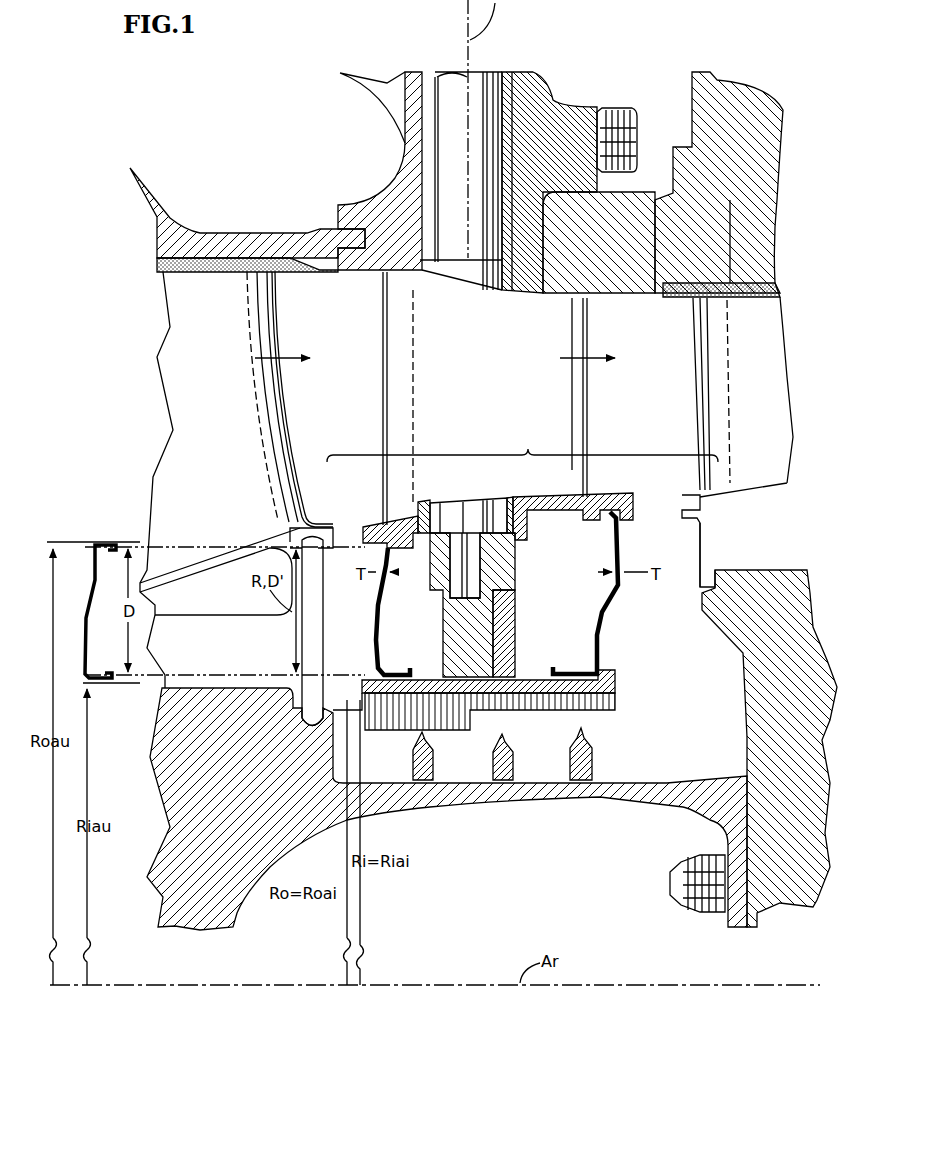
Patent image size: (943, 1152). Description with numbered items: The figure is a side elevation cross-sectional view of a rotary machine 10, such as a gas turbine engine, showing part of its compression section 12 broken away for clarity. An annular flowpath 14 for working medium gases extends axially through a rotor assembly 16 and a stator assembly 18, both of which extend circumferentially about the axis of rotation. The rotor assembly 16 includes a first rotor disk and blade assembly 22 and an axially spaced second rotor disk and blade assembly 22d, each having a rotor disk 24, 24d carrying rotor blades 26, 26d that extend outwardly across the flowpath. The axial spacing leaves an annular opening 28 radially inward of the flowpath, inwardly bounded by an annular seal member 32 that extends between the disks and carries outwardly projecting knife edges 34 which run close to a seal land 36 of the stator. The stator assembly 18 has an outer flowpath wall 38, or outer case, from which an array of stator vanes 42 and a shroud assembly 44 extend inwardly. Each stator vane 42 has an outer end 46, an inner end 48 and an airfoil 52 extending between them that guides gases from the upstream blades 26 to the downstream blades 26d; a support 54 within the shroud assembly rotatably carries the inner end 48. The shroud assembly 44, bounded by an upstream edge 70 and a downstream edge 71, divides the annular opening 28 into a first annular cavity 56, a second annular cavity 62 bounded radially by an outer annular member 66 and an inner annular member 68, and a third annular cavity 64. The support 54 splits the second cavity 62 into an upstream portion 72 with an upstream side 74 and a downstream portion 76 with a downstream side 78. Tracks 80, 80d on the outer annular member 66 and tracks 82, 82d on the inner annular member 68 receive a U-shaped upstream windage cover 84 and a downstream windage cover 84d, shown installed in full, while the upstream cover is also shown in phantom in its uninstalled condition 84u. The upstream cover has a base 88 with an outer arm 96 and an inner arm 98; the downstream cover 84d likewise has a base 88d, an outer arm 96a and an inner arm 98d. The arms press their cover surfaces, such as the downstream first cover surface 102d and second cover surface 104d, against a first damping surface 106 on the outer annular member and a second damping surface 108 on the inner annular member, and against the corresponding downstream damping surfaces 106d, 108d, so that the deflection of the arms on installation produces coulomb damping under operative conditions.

The rotary machine 10 is at (642, 148).
The compression section 12 is at (619, 71).
The annular flowpath 14 is at (418, 358).
The rotor assembly 16 is at (245, 904).
The stator assembly 18 is at (375, 190).
The first rotor disk and blade assembly 22 is at (421, 824).
The second rotor disk and blade assembly 22d is at (809, 560).
The rotor disk 24 is at (424, 824).
The rotor disk 24d is at (772, 718).
The rotor blades 26 is at (224, 421).
The rotor blades 26d is at (714, 442).
The annular opening 28 is at (522, 441).
The annular seal member 32 is at (447, 824).
The knife edges 34 is at (494, 746).
The seal land 36 is at (617, 706).
The outer flowpath wall 38 is at (358, 271).
The stator vane 42 is at (381, 336).
The shroud assembly 44 is at (675, 524).
The outer end 46 is at (449, 278).
The inner end 48 is at (497, 505).
The airfoil 52 is at (502, 384).
The support 54 is at (513, 627).
The first annular cavity 56 is at (374, 601).
The second annular cavity 62 is at (470, 605).
The third annular cavity 64 is at (712, 656).
The outer annular member 66 is at (552, 510).
The inner annular member 68 is at (515, 667).
The upstream edge 70 is at (366, 518).
The downstream edge 71 is at (636, 506).
The upstream portion 72 is at (383, 611).
The upstream side 74 is at (383, 611).
The downstream portion 76 is at (610, 593).
The downstream side 78 is at (610, 593).
The track 80 is at (427, 512).
The track 80d is at (546, 513).
The track 82 is at (470, 605).
The track 82d is at (528, 675).
The upstream windage cover 84 is at (383, 610).
The downstream windage cover 84d is at (621, 593).
The windage cover in uninstalled condition 84u is at (95, 540).
The base 88 is at (322, 631).
The base 88d is at (610, 593).
The outer arm 96 is at (383, 610).
The aft seal upper end 96a is at (610, 593).
The inner arm 98 is at (393, 548).
The inner arm 98d is at (610, 593).
The first cover surface 102d is at (556, 489).
The second cover surface 104d is at (600, 662).
The first damping surface 106 is at (410, 520).
The downstream first damping surface 106d is at (559, 504).
The second damping surface 108 is at (412, 722).
The downstream second damping surface 108d is at (520, 722).